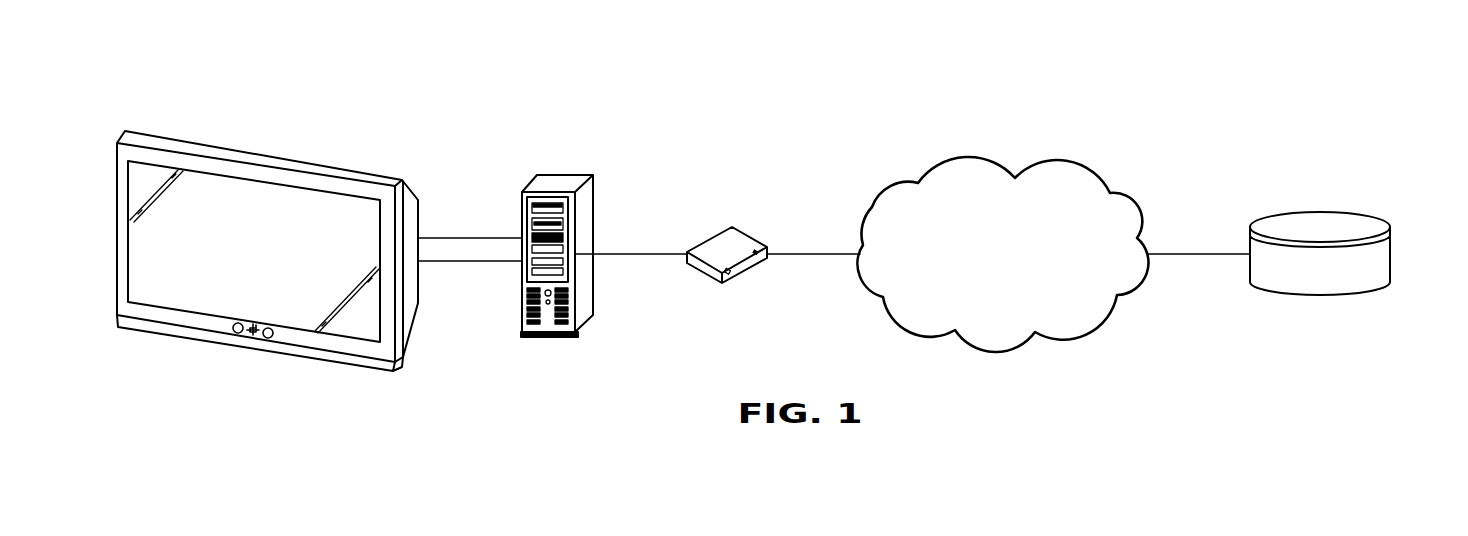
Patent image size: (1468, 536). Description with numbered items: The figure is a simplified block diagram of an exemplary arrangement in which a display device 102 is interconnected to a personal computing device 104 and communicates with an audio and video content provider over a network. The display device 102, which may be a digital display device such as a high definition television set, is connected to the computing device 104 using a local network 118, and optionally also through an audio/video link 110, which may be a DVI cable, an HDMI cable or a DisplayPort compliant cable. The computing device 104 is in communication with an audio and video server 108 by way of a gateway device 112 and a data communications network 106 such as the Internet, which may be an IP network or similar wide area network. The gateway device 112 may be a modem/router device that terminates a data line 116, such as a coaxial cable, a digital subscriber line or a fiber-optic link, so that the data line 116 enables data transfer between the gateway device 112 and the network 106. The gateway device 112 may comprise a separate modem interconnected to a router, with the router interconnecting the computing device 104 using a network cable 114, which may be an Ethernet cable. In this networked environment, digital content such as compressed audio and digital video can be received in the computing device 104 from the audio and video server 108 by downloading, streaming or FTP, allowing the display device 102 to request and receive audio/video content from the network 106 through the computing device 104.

The display device 102 is at (282, 205).
The personal computing device 104 is at (558, 183).
The data communications network 106 is at (984, 280).
The audio and video server 108 is at (1315, 228).
The audio/video link 110 is at (470, 237).
The gateway device 112 is at (722, 245).
The network cable 114 is at (638, 254).
The data line 116 is at (808, 254).
The local network 118 is at (468, 262).